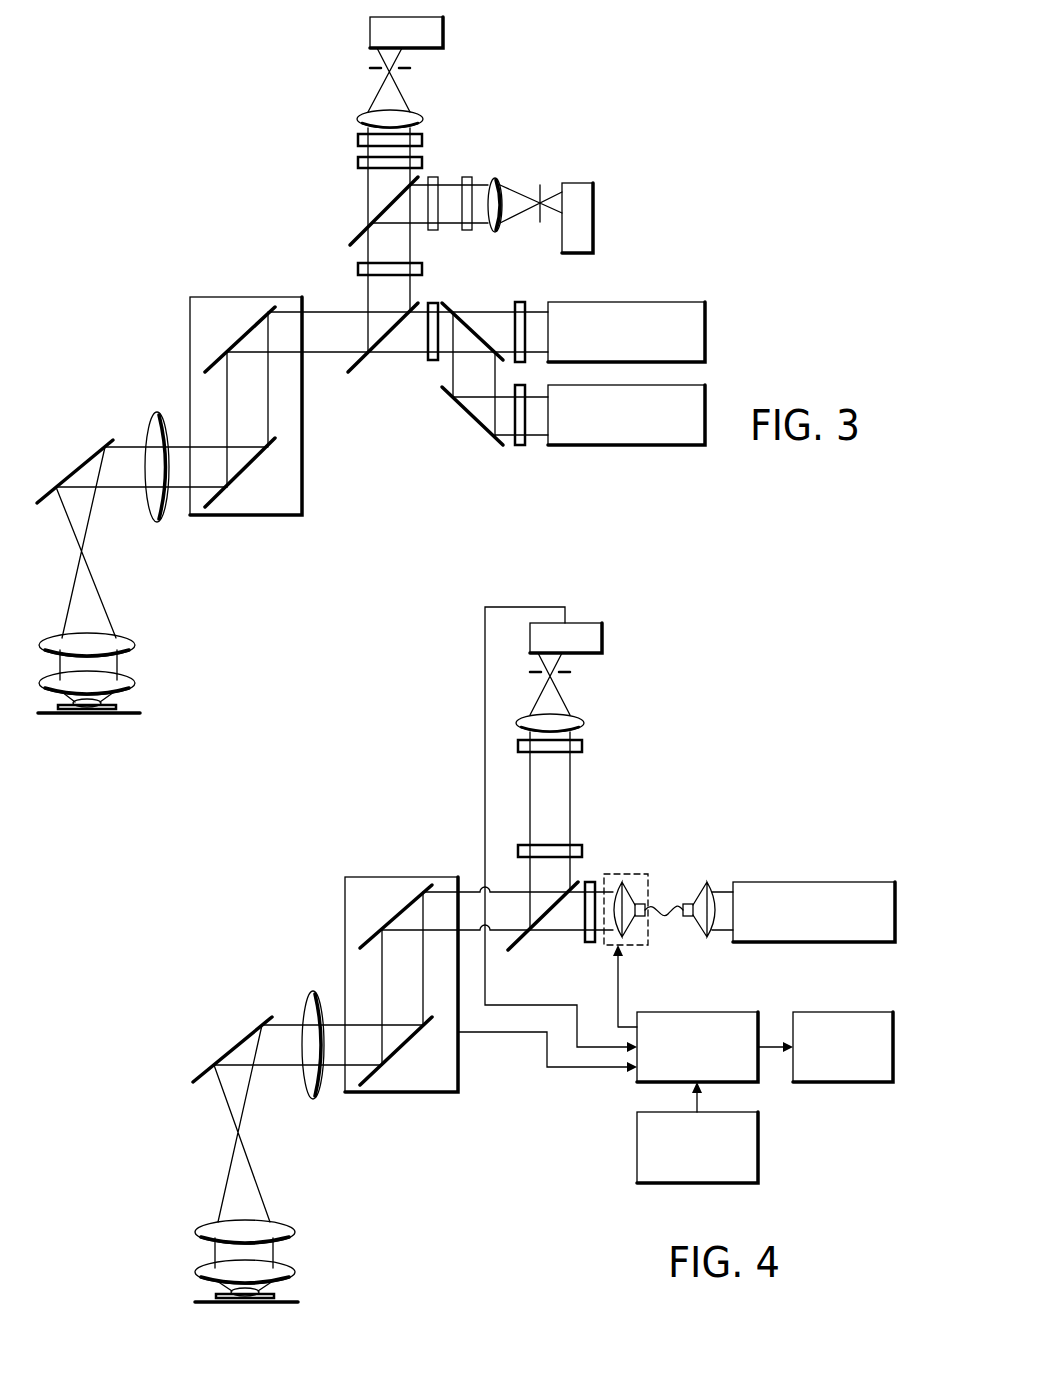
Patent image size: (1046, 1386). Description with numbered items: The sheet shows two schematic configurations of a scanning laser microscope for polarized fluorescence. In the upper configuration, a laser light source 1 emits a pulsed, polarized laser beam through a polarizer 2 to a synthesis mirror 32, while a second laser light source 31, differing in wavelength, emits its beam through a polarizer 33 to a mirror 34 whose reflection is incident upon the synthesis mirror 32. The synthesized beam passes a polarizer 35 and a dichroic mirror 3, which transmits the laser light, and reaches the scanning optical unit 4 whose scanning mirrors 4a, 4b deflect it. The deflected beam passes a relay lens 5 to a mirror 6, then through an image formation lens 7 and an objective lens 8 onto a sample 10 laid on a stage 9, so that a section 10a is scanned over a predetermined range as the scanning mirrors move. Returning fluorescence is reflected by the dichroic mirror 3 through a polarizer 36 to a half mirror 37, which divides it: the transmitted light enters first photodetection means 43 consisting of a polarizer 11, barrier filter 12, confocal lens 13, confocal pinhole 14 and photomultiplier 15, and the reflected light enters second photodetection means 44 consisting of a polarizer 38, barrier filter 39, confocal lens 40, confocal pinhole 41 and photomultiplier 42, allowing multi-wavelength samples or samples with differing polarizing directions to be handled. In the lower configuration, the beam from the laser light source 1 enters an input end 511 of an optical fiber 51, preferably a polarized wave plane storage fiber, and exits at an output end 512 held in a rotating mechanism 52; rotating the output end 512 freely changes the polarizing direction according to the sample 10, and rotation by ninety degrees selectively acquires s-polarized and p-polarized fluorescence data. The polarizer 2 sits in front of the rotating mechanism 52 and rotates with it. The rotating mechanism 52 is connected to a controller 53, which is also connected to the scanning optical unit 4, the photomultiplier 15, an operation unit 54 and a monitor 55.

In FIG. 3, the laser light source 1 is at (625, 300).
In FIG. 4, the laser light source 1 is at (818, 882).
In FIG. 3, the polarizer 2 is at (520, 300).
In FIG. 4, the polarizer 2 is at (588, 944).
In FIG. 3, the dichroic mirror 3 is at (365, 356).
In FIG. 4, the dichroic mirror 3 is at (520, 942).
In FIG. 3, the scanning optical unit 4 is at (302, 478).
In FIG. 4, the scanning optical unit 4 is at (458, 1057).
In FIG. 3, the scanning mirror 4a is at (240, 338).
In FIG. 4, the scanning mirror 4a is at (398, 912).
In FIG. 3, the scanning mirror 4b is at (250, 470).
In FIG. 4, the scanning mirror 4b is at (405, 1045).
In FIG. 3, the relay lens 5 is at (157, 525).
In FIG. 4, the relay lens 5 is at (312, 992).
In FIG. 3, the mirror 6 is at (60, 483).
In FIG. 4, the mirror 6 is at (215, 1058).
In FIG. 3, the image formation lens 7 is at (135, 645).
In FIG. 4, the image formation lens 7 is at (295, 1232).
In FIG. 3, the objective lens 8 is at (135, 683).
In FIG. 4, the objective lens 8 is at (295, 1272).
In FIG. 3, the stage 9 is at (128, 716).
In FIG. 4, the stage 9 is at (287, 1306).
In FIG. 3, the sample 10 is at (110, 700).
In FIG. 4, the sample 10 is at (262, 1290).
In FIG. 3, the section 10a is at (80, 710).
In FIG. 4, the section 10a is at (235, 1300).
In FIG. 3, the polarizer 11 is at (358, 163).
In FIG. 4, the polarizer 11 is at (582, 850).
In FIG. 3, the barrier filter 12 is at (358, 140).
In FIG. 4, the barrier filter 12 is at (583, 746).
In FIG. 3, the confocal lens 13 is at (360, 120).
In FIG. 4, the confocal lens 13 is at (585, 722).
In FIG. 3, the confocal pinhole 14 is at (375, 71).
In FIG. 4, the confocal pinhole 14 is at (565, 677).
In FIG. 3, the photomultiplier 15 is at (370, 32).
In FIG. 4, the photomultiplier 15 is at (602, 636).
In FIG. 3, the laser light source 31 is at (625, 447).
In FIG. 3, the synthesis mirror 32 is at (455, 310).
In FIG. 3, the polarizer 33 is at (520, 449).
In FIG. 3, the mirror 34 is at (470, 410).
In FIG. 3, the polarizer 35 is at (431, 362).
In FIG. 3, the polarizer 36 is at (358, 269).
In FIG. 3, the half mirror 37 is at (365, 231).
In FIG. 3, the polarizer 38 is at (433, 177).
In FIG. 3, the barrier filter 39 is at (467, 177).
In FIG. 3, the confocal lens 40 is at (492, 180).
In FIG. 3, the confocal pinhole 41 is at (542, 190).
In FIG. 3, the photomultiplier 42 is at (593, 205).
In FIG. 3, the photodetection means 43 is at (250, 117).
In FIG. 3, the photodetection means 44 is at (620, 140).
In FIG. 4, the optical fiber 51 is at (667, 917).
In FIG. 4, the input end 511 is at (690, 900).
In FIG. 4, the output end 512 is at (645, 900).
In FIG. 4, the rotating mechanism 52 is at (620, 874).
In FIG. 4, the controller 53 is at (735, 1012).
In FIG. 4, the operation unit 54 is at (758, 1143).
In FIG. 4, the monitor 55 is at (833, 1012).